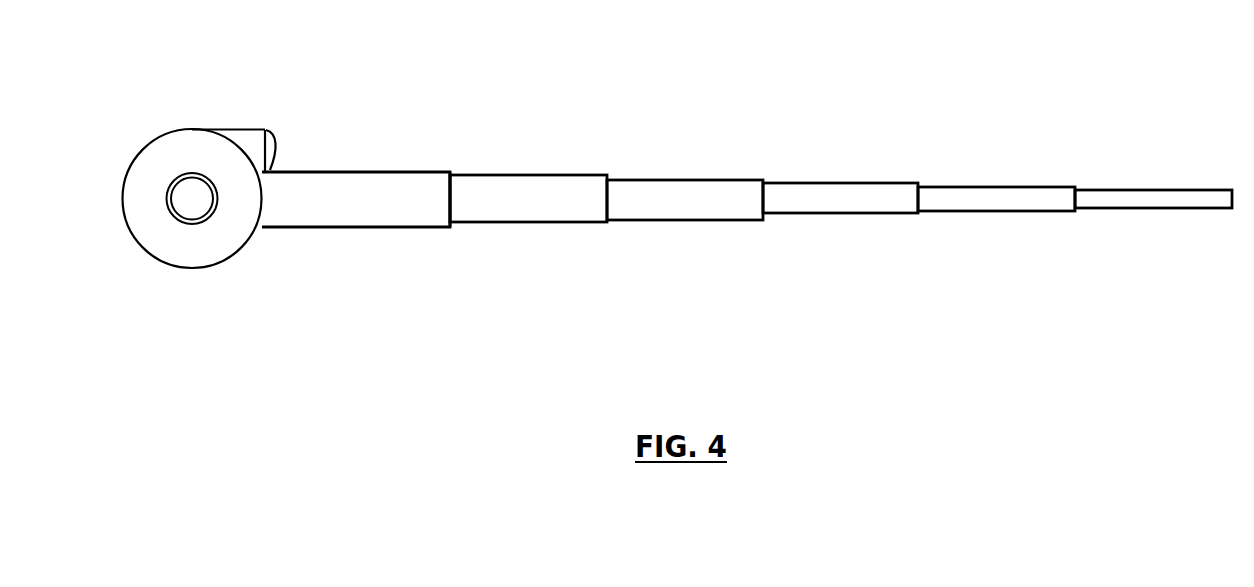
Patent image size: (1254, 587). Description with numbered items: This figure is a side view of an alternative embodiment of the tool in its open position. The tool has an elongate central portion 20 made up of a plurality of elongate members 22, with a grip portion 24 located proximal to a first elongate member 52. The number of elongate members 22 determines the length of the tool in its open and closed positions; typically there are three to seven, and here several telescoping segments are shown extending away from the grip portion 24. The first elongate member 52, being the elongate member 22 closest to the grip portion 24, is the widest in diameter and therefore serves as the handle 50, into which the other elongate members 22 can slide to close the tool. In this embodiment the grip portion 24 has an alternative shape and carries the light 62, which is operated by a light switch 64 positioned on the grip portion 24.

The elongate central portion 20 is at (1230, 153).
The elongate members 22 is at (368, 209).
The grip portion 24 is at (140, 160).
The handle 50 is at (437, 215).
The first elongate member 52 is at (312, 215).
The light 62 is at (273, 135).
The light switch 64 is at (200, 212).